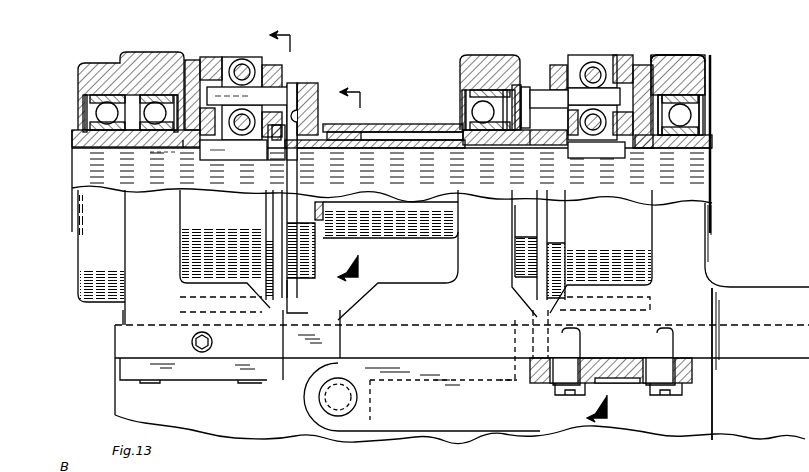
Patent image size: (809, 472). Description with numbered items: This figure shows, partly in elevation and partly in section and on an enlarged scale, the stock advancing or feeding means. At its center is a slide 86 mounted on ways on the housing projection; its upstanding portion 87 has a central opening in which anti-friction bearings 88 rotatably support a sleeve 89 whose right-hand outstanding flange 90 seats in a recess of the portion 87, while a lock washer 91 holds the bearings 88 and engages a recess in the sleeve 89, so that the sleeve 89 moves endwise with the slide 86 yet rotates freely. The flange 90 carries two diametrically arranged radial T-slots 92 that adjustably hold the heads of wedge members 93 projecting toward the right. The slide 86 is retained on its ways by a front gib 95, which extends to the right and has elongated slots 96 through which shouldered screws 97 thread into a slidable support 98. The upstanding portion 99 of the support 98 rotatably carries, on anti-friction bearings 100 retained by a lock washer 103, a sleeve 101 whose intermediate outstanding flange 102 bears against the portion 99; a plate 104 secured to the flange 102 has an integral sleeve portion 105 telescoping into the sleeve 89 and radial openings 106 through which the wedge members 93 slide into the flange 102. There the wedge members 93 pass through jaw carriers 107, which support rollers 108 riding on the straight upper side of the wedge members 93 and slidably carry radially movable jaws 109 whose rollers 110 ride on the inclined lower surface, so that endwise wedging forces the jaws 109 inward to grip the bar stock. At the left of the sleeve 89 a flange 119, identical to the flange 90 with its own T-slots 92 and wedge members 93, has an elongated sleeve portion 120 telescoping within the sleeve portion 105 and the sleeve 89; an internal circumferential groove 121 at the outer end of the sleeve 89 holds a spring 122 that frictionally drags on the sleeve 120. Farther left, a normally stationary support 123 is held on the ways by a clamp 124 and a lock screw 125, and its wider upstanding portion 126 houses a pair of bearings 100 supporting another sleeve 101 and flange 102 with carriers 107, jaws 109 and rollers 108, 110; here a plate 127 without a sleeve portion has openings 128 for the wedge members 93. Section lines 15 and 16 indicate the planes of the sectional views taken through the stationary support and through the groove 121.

The section line 15 is at (438, 234).
The section line 16 is at (343, 183).
The slide 86 is at (388, 292).
The upstanding portion 87 is at (462, 74).
The anti-friction bearings 88 is at (483, 105).
The sleeve 89 is at (395, 124).
The outstanding flange 90 is at (515, 85).
The lock washer 91 is at (460, 118).
The T-slots 92 is at (311, 106).
The wedge members 93 is at (291, 88).
The front gib 95 is at (692, 373).
The elongated slots 96 is at (648, 380).
The shouldered screws 97 is at (666, 362).
The slidable support 98 is at (712, 285).
The upstanding portion 99 is at (706, 62).
The anti-friction bearings 100 is at (118, 104).
The sleeve 101 is at (76, 134).
The outstanding flange 102 is at (190, 68).
The lock washer 103 is at (82, 103).
The plate 104 is at (558, 65).
The sleeve portion 105 is at (496, 142).
The radially extending openings 106 is at (520, 144).
The jaw carriers 107 is at (166, 148).
The rollers 108 is at (232, 65).
The radially movable jaws 109 is at (236, 150).
The rollers 110 is at (185, 152).
The flange 119 is at (313, 118).
The sleeve portion 120 is at (405, 149).
The circumferential groove 121 is at (350, 142).
The spring 122 is at (346, 140).
The stationary support 123 is at (256, 347).
The clamp 124 is at (200, 368).
The lock screw 125 is at (194, 343).
The upstanding portion 126 is at (78, 236).
The plate 127 is at (278, 95).
The radially extending openings 128 is at (262, 150).